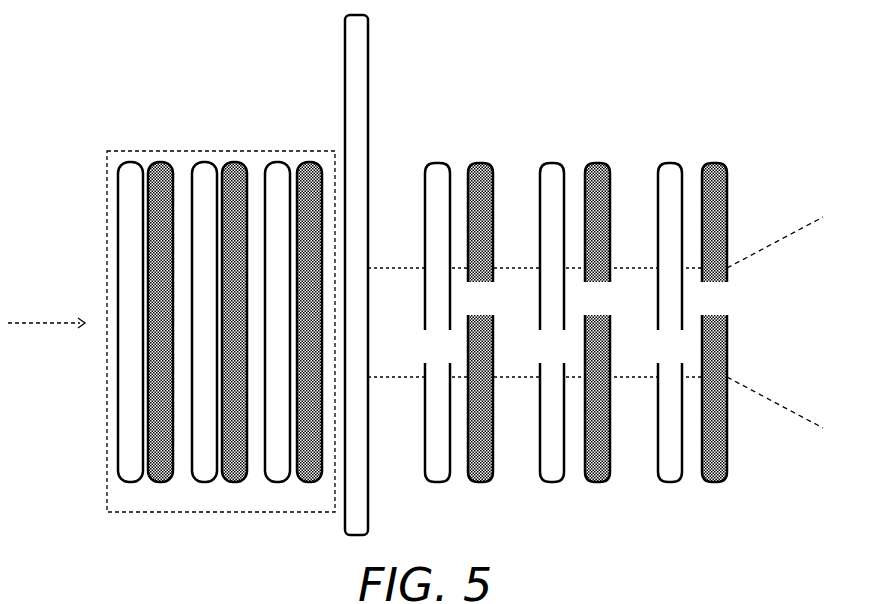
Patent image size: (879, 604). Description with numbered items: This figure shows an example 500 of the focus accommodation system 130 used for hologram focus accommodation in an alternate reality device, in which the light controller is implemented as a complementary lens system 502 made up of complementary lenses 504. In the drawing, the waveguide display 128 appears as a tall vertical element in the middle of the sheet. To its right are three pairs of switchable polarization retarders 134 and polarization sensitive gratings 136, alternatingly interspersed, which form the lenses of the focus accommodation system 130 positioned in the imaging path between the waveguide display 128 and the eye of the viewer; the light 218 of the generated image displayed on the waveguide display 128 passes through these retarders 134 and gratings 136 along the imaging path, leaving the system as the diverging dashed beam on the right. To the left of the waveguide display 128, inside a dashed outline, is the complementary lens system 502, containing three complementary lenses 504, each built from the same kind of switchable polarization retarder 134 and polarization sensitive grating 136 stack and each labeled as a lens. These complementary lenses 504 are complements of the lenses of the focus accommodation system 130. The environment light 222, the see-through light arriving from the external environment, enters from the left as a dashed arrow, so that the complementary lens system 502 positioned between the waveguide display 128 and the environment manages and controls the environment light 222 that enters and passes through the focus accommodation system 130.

The waveguide display 128 is at (347, 75).
The focus accommodation system 130 is at (714, 74).
The switchable polarization retarder 134 is at (432, 163).
The polarization sensitive grating 136 is at (477, 163).
The light 218 is at (773, 402).
The environment light 222 is at (58, 308).
The example 500 is at (599, 258).
The complementary lens system 502 is at (216, 276).
The complementary lens 504 is at (143, 163).